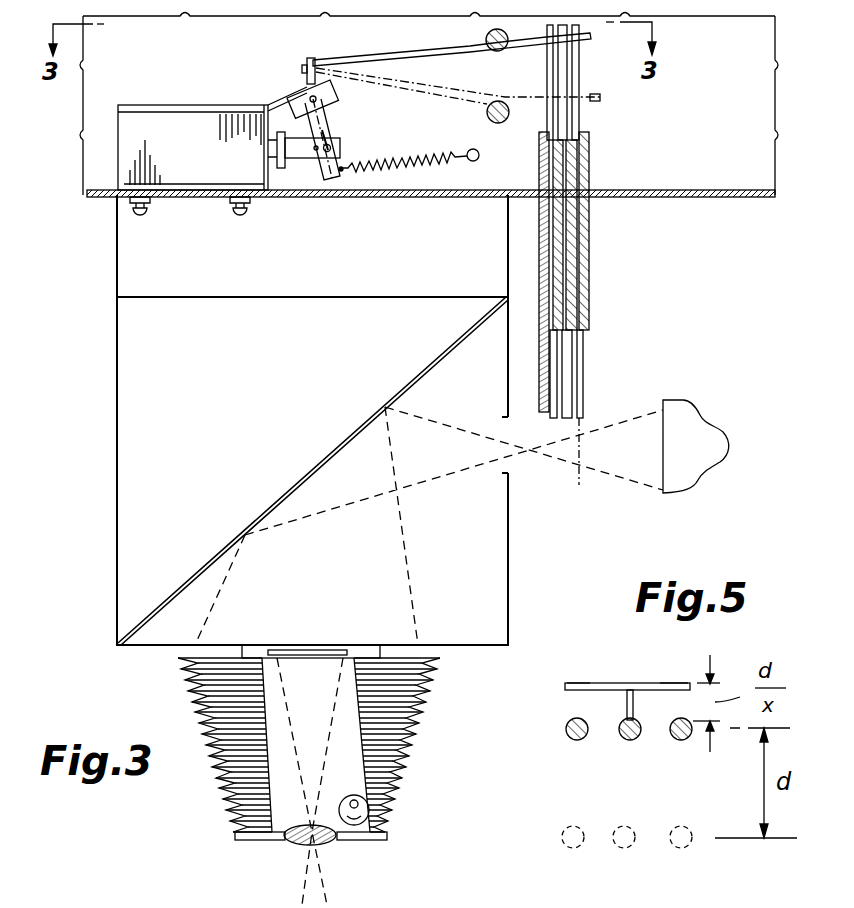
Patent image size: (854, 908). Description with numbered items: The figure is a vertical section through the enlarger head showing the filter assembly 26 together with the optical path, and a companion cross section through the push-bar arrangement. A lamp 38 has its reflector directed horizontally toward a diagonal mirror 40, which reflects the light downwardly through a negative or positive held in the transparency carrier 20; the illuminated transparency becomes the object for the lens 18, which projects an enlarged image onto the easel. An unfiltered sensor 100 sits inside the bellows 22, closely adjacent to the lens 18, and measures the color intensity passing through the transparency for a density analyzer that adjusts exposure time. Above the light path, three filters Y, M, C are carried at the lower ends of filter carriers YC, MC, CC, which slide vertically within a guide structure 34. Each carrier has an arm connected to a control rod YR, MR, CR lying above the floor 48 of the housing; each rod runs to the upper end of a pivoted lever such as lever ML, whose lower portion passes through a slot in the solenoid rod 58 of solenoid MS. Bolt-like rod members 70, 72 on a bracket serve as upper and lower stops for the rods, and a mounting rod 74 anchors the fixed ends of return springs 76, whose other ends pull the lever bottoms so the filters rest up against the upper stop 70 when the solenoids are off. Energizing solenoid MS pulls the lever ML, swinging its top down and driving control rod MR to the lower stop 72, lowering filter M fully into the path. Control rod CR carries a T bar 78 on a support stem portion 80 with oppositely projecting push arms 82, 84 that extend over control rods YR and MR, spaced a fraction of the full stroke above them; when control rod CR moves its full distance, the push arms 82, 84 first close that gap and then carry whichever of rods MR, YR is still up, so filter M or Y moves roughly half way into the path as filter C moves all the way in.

In FIG. 3, the filter assembly 26 is at (277, 202).
In FIG. 3, the solenoid MS is at (212, 165).
In FIG. 3, the lever ML is at (310, 62).
In FIG. 3, the control rod MR is at (400, 62).
In FIG. 5, the control rod MR is at (570, 740).
In FIG. 3, the upper rod member 70 is at (486, 38).
In FIG. 3, the lower rod member 72 is at (487, 112).
In FIG. 3, the solenoid rod 58 is at (308, 156).
In FIG. 3, the floor 48 is at (350, 195).
In FIG. 3, the return spring 76 is at (405, 163).
In FIG. 3, the mounting rod 74 is at (470, 162).
In FIG. 3, the diagonal mirror 40 is at (330, 452).
In FIG. 3, the guide structure 34 is at (590, 202).
In FIG. 3, the filter carrier CC is at (550, 258).
In FIG. 3, the filter carrier MC is at (567, 278).
In FIG. 3, the filter carrier YC is at (582, 243).
In FIG. 3, the filter C is at (552, 383).
In FIG. 3, the filter M is at (570, 380).
In FIG. 3, the filter Y is at (580, 350).
In FIG. 3, the lamp 38 is at (694, 424).
In FIG. 3, the transparency carrier 20 is at (250, 655).
In FIG. 3, the bellows 22 is at (220, 770).
In FIG. 3, the lens 18 is at (293, 845).
In FIG. 3, the unfiltered sensor 100 is at (366, 812).
In FIG. 5, the T bar 78 is at (625, 683).
In FIG. 5, the push arm 84 is at (582, 683).
In FIG. 5, the push arm 82 is at (665, 683).
In FIG. 5, the support stem portion 80 is at (625, 707).
In FIG. 5, the control rod CR is at (630, 740).
In FIG. 5, the control rod YR is at (681, 740).